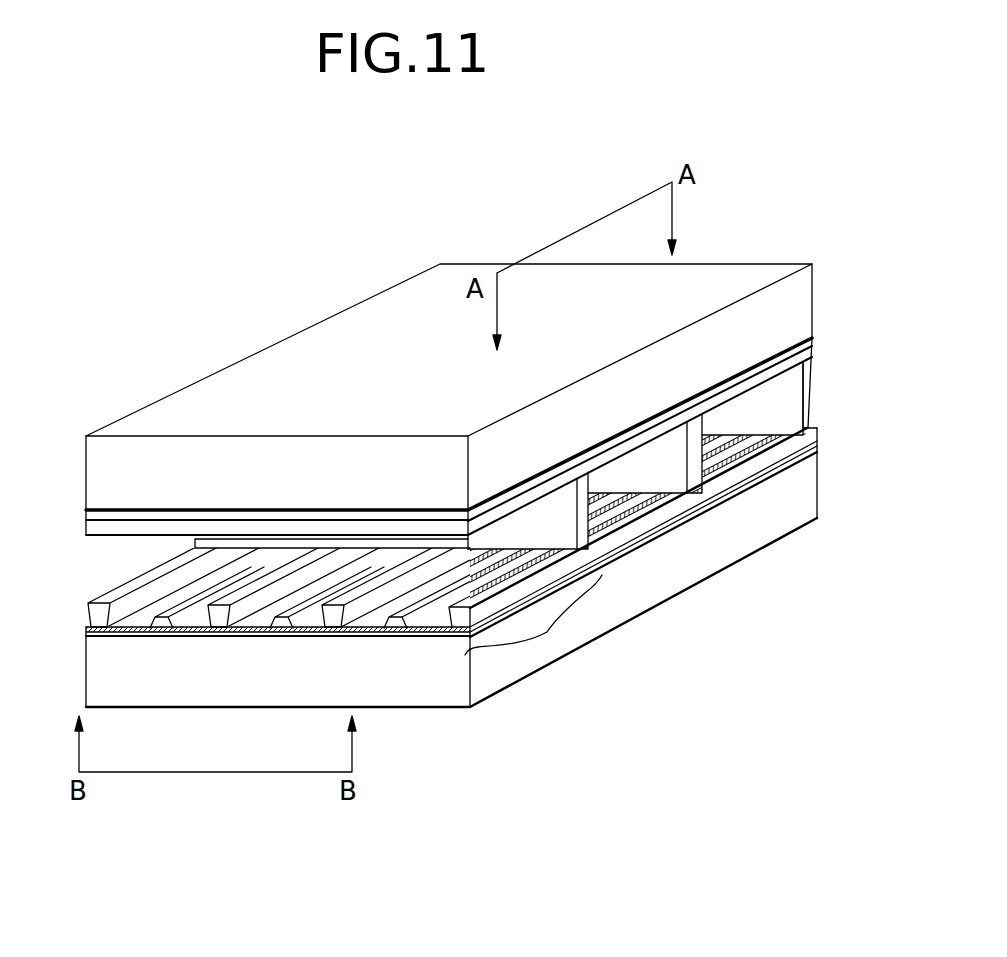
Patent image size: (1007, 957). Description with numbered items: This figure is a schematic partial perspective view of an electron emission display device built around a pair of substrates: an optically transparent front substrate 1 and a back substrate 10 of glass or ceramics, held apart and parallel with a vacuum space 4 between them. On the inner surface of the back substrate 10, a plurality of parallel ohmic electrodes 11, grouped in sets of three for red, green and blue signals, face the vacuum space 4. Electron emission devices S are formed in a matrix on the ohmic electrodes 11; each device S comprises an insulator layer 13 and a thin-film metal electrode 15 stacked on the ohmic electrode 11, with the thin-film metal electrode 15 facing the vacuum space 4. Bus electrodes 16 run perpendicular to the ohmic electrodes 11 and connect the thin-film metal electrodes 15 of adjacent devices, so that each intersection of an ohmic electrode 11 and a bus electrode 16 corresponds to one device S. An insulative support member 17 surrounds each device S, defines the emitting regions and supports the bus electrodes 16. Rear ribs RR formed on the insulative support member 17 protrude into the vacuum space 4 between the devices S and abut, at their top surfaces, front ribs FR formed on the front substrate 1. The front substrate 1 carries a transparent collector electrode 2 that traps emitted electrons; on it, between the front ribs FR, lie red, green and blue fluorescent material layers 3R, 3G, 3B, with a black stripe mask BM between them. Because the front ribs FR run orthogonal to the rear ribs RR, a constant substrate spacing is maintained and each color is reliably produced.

The front substrate 1 is at (812, 264).
The transparent collector electrode 2 is at (812, 338).
The black stripe mask BM is at (808, 343).
The red fluorescent material layer 3R is at (537, 493).
The green fluorescent material layer 3G is at (652, 433).
The blue fluorescent material layer 3B is at (738, 390).
The front rib FR is at (807, 397).
The rear rib RR is at (813, 430).
The vacuum space 4 is at (83, 575).
The back substrate 10 is at (812, 490).
The ohmic electrode 11 is at (657, 540).
The insulator layer 13 is at (135, 628).
The thin-film metal electrode 15 is at (377, 626).
The bus electrode 16 is at (270, 628).
The insulative support member 17 is at (815, 445).
The electron emission device S is at (552, 638).